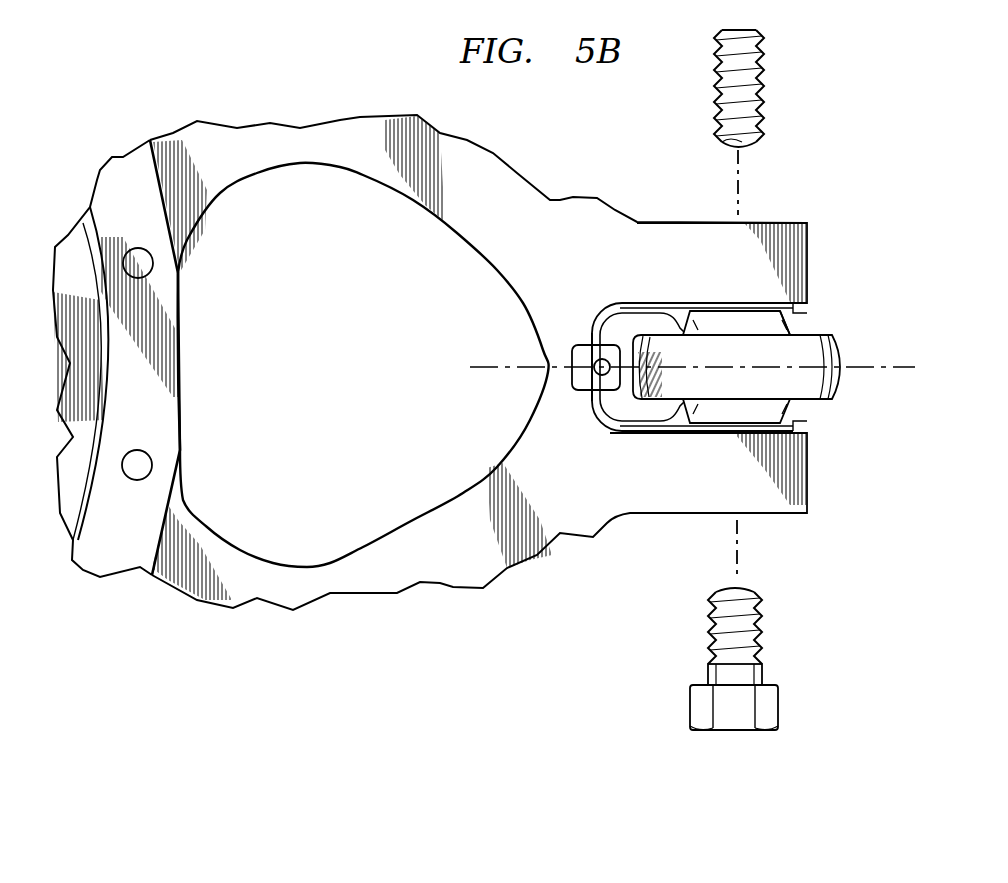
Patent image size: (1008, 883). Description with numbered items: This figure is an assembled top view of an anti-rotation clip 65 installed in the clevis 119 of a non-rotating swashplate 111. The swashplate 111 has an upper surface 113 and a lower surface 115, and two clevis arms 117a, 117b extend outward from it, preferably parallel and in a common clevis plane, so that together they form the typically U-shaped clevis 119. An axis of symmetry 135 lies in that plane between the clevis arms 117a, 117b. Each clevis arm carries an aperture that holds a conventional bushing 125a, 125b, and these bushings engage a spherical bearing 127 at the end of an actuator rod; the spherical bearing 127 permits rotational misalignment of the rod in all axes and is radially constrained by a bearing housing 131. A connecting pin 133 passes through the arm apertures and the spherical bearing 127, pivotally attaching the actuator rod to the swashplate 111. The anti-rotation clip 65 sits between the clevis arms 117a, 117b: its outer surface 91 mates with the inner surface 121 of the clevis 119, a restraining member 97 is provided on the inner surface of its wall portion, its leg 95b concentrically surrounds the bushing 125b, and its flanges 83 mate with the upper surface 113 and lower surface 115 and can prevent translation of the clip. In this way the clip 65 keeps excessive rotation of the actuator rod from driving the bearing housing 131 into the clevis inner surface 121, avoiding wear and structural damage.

The non-rotating swashplate 111 is at (254, 122).
The upper surface 113 is at (360, 115).
The lower surface 115 is at (462, 565).
The clevis arm 117a is at (787, 507).
The clevis arm 117b is at (800, 240).
The clevis 119 is at (771, 387).
The inner surface 121 is at (600, 423).
The bushing 125a is at (795, 420).
The bushing 125b is at (800, 313).
The spherical bearing 127 is at (763, 318).
The bearing housing 131 is at (713, 393).
The connecting pin 133 is at (763, 74).
The axis of symmetry 135 is at (487, 365).
The anti-rotation clip 65 is at (622, 312).
The flange 83 is at (580, 345).
The outer surface 91 is at (690, 303).
The leg 95b is at (723, 307).
The restraining member 97 is at (656, 315).